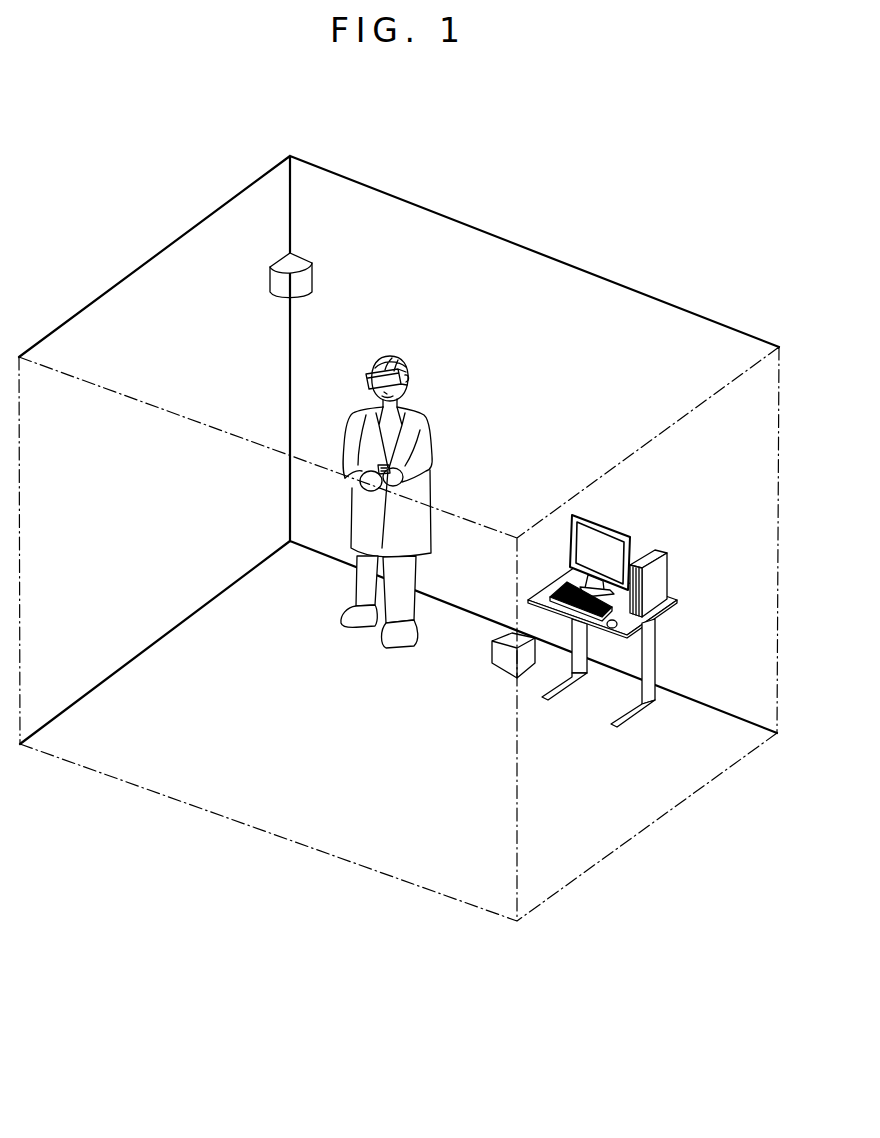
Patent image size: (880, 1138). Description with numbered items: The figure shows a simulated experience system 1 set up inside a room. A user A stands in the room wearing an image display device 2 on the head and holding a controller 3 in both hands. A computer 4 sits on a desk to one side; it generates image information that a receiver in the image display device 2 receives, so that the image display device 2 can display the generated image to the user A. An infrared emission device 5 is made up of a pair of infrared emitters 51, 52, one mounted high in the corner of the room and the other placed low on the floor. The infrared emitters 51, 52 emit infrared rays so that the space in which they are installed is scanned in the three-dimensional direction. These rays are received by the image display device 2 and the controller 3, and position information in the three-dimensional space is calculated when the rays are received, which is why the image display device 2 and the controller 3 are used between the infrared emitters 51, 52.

The simulated experience system 1 is at (333, 237).
The image display device 2 is at (367, 378).
The controller 3 is at (371, 477).
The computer 4 is at (646, 561).
The infrared emission device 5 is at (346, 509).
The infrared emitter 51 is at (288, 283).
The infrared emitter 52 is at (495, 660).
The user A is at (408, 418).